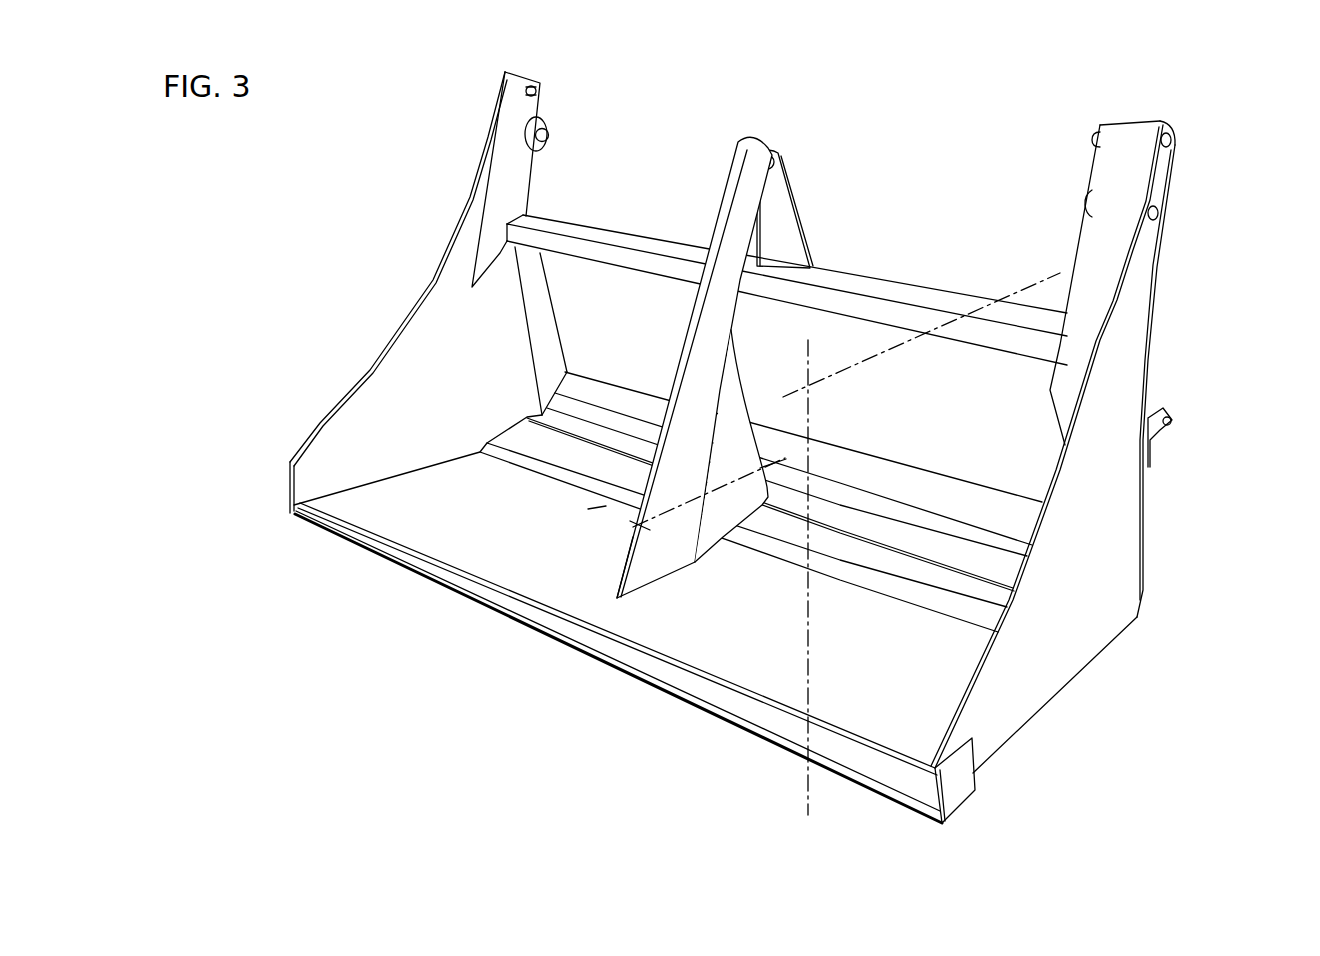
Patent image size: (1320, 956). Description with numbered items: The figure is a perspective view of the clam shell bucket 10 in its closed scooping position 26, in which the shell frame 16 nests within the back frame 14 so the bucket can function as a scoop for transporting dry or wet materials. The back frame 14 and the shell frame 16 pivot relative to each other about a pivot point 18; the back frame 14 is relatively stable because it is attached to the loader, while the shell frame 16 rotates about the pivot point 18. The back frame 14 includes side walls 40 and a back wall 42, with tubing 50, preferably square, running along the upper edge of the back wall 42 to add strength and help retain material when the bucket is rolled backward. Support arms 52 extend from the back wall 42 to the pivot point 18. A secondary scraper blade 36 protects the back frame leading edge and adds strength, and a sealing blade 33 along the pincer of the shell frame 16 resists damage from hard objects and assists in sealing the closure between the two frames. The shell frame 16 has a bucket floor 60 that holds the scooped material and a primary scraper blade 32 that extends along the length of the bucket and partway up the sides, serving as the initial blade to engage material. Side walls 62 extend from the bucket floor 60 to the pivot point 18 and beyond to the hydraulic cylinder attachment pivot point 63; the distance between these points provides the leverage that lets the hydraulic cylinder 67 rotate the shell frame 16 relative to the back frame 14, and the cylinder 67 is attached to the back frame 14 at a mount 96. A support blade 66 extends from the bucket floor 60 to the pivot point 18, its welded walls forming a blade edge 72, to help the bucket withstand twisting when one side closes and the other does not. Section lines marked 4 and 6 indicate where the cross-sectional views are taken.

The bucket 10 is at (1256, 426).
The back frame 14 is at (903, 274).
The shell frame 16 is at (398, 623).
The pivot point 18 is at (548, 134).
The closed scooping position 26 is at (345, 320).
The primary scraper blade 32 is at (637, 668).
The sealing blade 33 is at (1007, 607).
The secondary scraper blade 36 is at (1015, 588).
The side walls 40 is at (542, 315).
The back wall 42 is at (944, 418).
The tubing 50 is at (640, 235).
The support arms 52 is at (790, 230).
The bucket floor 60 is at (752, 626).
The side walls 62 is at (470, 372).
The hydraulic cylinder attachment pivot point 63 is at (537, 91).
The support blade 66 is at (652, 548).
The hydraulic cylinder 67 is at (1150, 378).
The blade edge 72 is at (616, 583).
The mount 96 is at (1160, 432).
The section line 4- 4 is at (1012, 277).
The section line 6- 6 is at (597, 505).